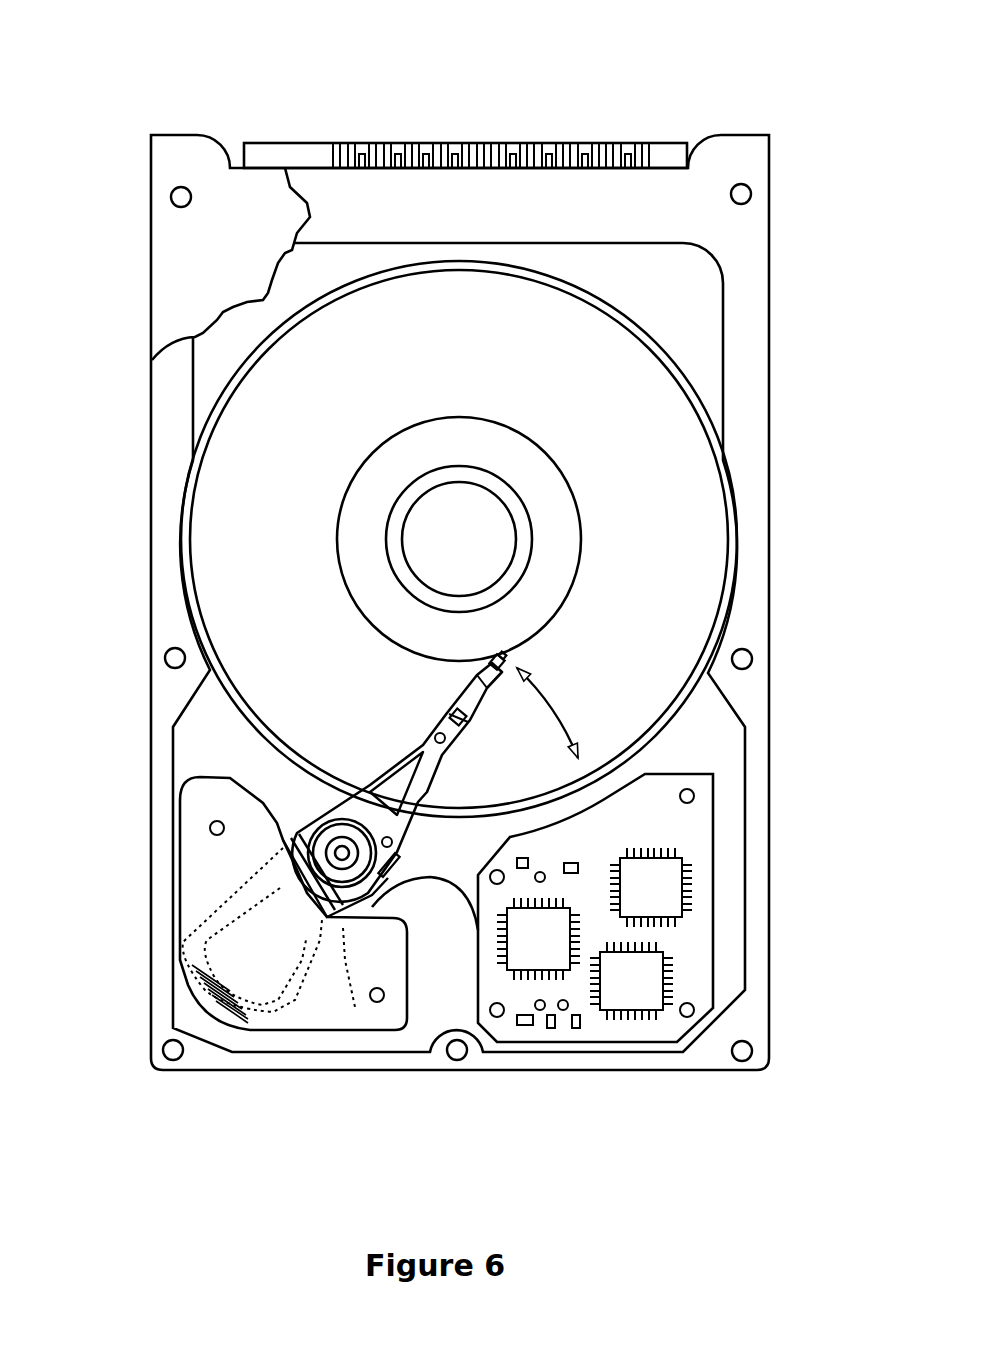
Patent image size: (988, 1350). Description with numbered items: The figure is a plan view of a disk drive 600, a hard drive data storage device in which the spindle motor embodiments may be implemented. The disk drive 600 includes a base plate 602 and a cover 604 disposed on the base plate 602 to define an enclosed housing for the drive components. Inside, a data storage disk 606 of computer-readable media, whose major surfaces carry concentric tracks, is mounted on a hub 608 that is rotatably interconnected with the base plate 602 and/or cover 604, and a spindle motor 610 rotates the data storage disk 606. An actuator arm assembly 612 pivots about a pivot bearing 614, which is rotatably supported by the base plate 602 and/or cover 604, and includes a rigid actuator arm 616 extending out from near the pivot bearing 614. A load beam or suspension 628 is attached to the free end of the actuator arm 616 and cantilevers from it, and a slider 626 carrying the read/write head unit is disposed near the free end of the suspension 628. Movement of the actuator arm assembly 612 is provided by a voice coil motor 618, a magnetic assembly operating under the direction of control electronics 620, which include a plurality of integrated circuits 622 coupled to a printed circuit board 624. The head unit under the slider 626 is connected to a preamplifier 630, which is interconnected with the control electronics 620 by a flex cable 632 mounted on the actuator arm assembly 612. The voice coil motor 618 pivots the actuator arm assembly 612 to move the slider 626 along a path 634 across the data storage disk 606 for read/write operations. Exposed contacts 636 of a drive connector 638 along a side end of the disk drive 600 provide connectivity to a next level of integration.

The disk drive 600 is at (146, 46).
The base plate 602 is at (173, 617).
The cover 604 is at (217, 255).
The data storage disk 606 is at (307, 425).
The hub 608 is at (347, 497).
The spindle motor 610 is at (430, 557).
The actuator arm assembly 612 is at (434, 838).
The pivot bearing 614 is at (328, 856).
The actuator arm 616 is at (350, 808).
The voice coil motor 618 is at (166, 948).
The control electronics 620 is at (713, 1083).
The integrated circuit 622 is at (657, 885).
The printed circuit board 624 is at (685, 948).
The slider 626 is at (503, 658).
The suspension 628 is at (463, 700).
The preamplifier 630 is at (397, 852).
The flex cable 632 is at (392, 862).
The path 634 is at (557, 712).
The exposed contacts 636 is at (649, 150).
The drive connector 638 is at (250, 150).